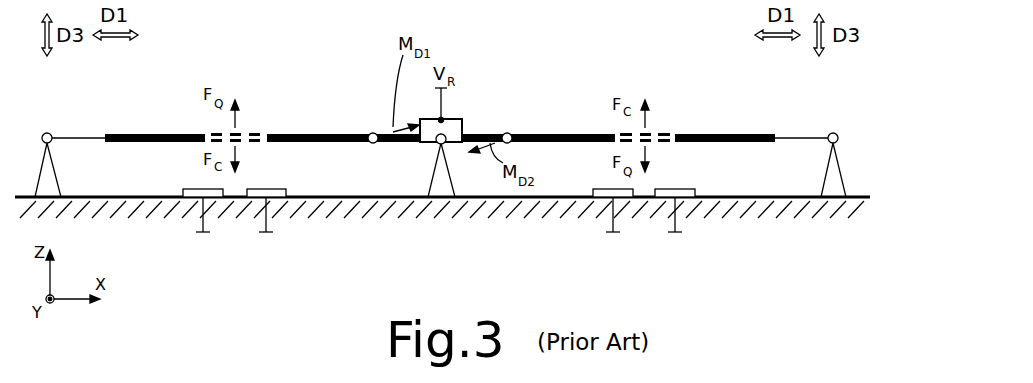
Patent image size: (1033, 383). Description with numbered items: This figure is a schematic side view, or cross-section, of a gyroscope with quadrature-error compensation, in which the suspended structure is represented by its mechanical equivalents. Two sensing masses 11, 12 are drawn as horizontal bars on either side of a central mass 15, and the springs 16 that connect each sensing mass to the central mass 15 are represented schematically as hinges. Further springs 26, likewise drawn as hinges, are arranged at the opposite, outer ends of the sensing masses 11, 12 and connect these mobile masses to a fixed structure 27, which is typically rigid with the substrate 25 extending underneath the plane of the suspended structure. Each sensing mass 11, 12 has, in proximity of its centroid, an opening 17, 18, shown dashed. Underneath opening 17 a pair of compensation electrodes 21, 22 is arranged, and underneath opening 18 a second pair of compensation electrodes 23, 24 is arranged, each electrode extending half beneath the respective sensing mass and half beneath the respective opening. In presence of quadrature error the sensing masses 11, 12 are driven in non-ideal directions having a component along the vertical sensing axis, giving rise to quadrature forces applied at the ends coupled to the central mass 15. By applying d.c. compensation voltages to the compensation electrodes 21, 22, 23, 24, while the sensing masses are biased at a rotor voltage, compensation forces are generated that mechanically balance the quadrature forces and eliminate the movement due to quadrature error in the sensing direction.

The sensing mass 11 is at (158, 133).
The sensing mass 12 is at (742, 130).
The central mass 15 is at (473, 135).
The springs 16 is at (373, 132).
The opening 17 is at (255, 128).
The opening 18 is at (660, 128).
The compensation electrode 21 is at (196, 189).
The compensation electrode 22 is at (268, 189).
The compensation electrode 23 is at (610, 189).
The compensation electrode 24 is at (680, 189).
The substrate 25 is at (804, 210).
The springs 26 is at (52, 130).
The fixed structure 27 is at (48, 172).